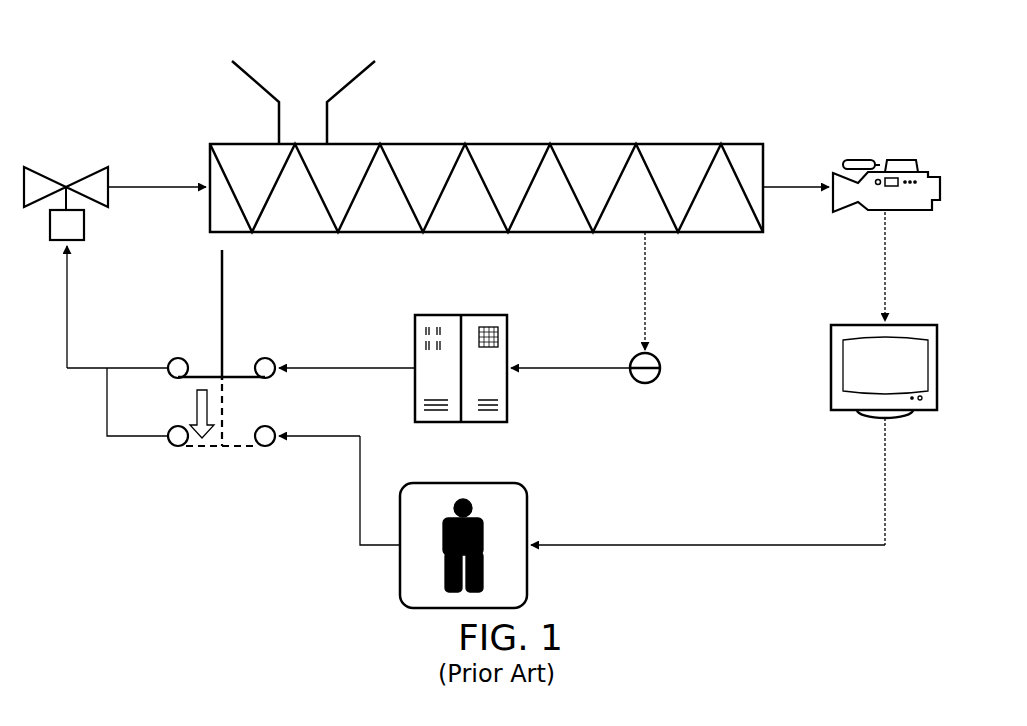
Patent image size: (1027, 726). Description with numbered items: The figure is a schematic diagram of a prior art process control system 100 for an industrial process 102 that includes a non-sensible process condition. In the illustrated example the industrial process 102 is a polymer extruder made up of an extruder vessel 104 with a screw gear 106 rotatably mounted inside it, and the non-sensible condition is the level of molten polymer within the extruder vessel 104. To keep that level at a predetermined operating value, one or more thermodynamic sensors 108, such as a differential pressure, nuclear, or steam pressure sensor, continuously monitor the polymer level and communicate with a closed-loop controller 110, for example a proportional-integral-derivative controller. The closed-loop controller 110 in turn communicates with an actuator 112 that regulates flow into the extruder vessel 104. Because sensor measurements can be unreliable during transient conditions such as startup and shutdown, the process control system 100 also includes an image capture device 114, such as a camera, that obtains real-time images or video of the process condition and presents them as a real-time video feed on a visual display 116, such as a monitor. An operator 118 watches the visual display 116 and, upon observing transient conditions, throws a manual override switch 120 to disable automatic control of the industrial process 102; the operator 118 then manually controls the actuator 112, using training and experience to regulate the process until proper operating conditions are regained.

The process control system 100 is at (104, 22).
The industrial process 102 is at (512, 139).
The extruder vessel 104 is at (671, 143).
The screw gear 106 is at (398, 172).
The thermodynamic sensor 108 is at (661, 377).
The closed-loop controller 110 is at (508, 393).
The actuator 112 is at (86, 241).
The image capture device 114 is at (846, 212).
The visual display 116 is at (831, 398).
The operator 118 is at (527, 489).
The manual override switch 120 is at (249, 336).